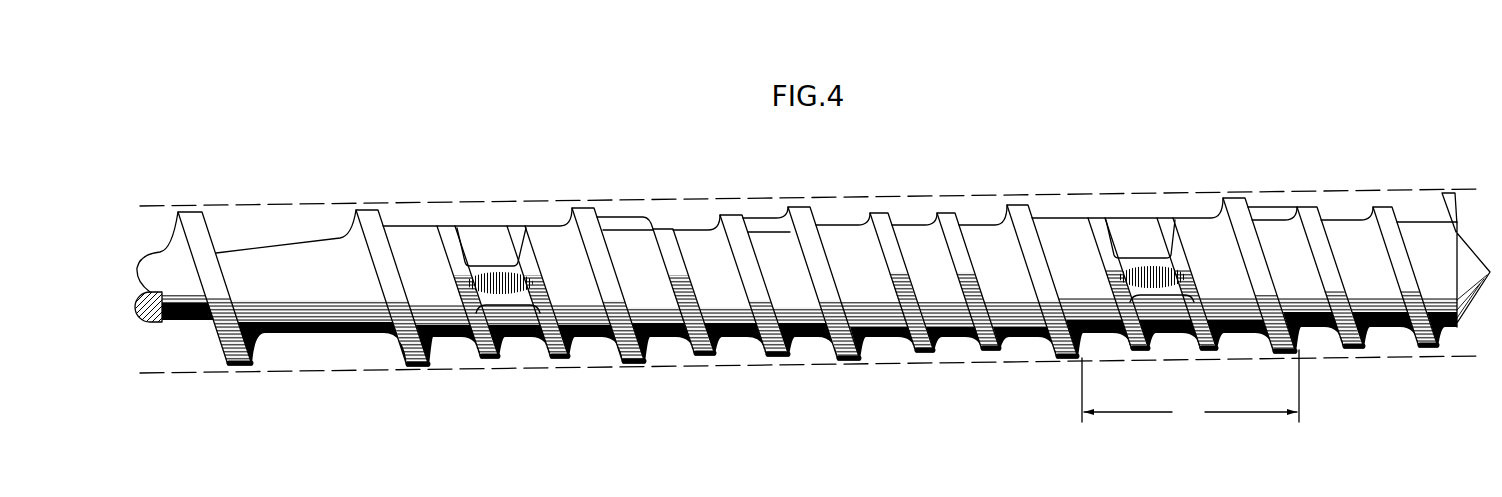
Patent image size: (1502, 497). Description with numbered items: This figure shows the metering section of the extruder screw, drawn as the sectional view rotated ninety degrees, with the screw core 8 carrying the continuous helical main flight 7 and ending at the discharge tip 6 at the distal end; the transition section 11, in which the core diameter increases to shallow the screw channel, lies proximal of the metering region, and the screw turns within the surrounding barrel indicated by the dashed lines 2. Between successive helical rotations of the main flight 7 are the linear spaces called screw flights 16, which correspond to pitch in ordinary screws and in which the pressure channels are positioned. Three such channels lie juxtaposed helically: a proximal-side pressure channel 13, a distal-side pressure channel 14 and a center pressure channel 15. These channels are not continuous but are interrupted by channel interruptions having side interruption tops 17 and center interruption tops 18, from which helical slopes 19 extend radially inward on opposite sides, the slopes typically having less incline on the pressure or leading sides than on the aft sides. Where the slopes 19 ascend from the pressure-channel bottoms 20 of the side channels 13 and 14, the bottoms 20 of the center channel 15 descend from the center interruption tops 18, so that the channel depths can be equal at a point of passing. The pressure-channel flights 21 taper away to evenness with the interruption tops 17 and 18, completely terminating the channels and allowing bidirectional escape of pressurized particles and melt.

The barrel 2 is at (342, 205).
The discharge tip 6 is at (1452, 230).
The main flight 7 is at (232, 367).
The screw core 8 is at (180, 322).
The transition section 11 is at (272, 186).
The proximal-side pressure channel 13 is at (837, 220).
The distal-side pressure channel 14 is at (968, 220).
The center pressure channel 15 is at (912, 220).
The screw flights 16 is at (1190, 387).
The side interruption tops 17 is at (622, 217).
The center interruption tops 18 is at (493, 283).
The helical slopes 19 is at (535, 303).
The pressure-channel bottoms 20 is at (900, 220).
The pressure-channel flights 21 is at (488, 353).